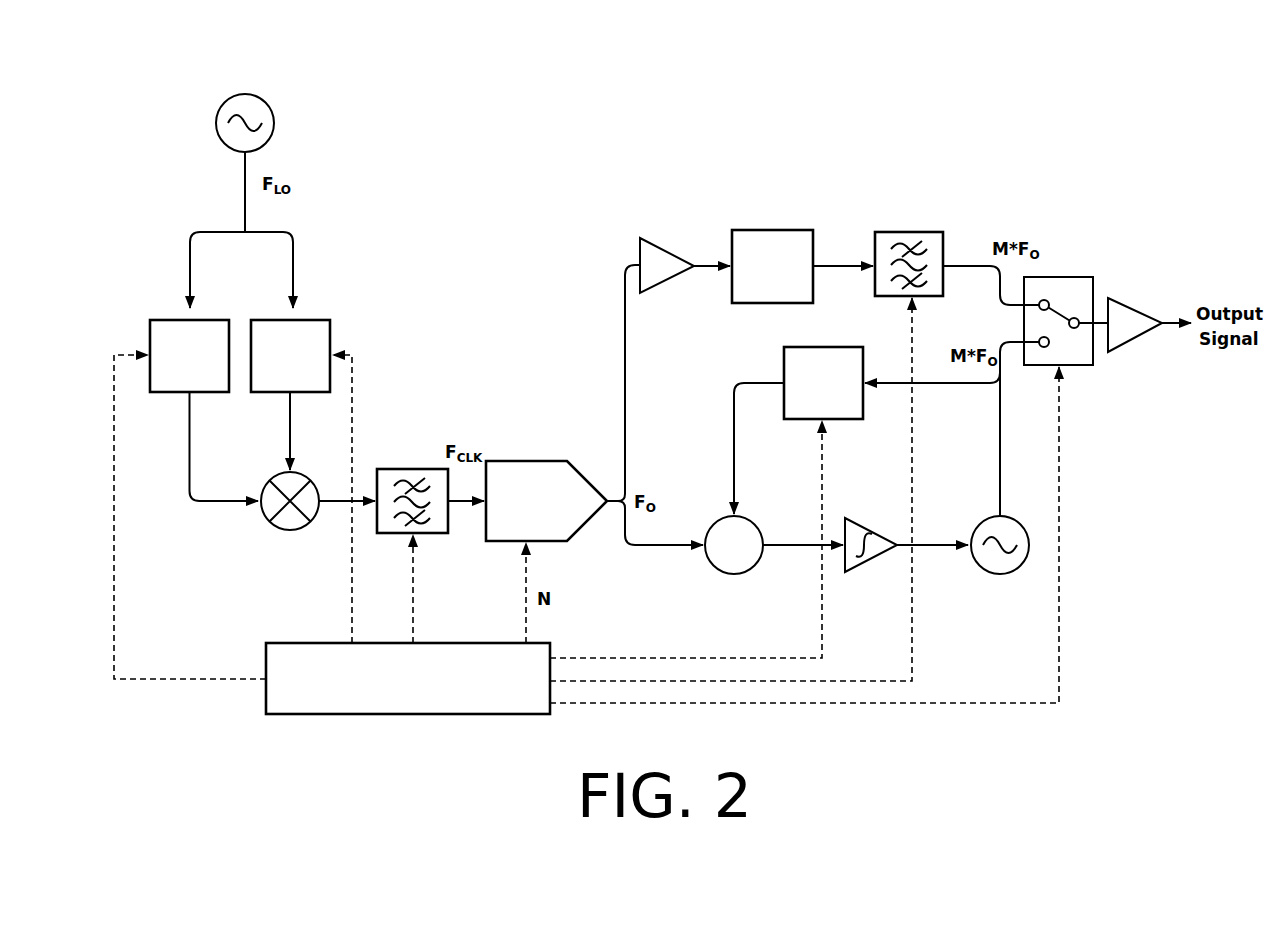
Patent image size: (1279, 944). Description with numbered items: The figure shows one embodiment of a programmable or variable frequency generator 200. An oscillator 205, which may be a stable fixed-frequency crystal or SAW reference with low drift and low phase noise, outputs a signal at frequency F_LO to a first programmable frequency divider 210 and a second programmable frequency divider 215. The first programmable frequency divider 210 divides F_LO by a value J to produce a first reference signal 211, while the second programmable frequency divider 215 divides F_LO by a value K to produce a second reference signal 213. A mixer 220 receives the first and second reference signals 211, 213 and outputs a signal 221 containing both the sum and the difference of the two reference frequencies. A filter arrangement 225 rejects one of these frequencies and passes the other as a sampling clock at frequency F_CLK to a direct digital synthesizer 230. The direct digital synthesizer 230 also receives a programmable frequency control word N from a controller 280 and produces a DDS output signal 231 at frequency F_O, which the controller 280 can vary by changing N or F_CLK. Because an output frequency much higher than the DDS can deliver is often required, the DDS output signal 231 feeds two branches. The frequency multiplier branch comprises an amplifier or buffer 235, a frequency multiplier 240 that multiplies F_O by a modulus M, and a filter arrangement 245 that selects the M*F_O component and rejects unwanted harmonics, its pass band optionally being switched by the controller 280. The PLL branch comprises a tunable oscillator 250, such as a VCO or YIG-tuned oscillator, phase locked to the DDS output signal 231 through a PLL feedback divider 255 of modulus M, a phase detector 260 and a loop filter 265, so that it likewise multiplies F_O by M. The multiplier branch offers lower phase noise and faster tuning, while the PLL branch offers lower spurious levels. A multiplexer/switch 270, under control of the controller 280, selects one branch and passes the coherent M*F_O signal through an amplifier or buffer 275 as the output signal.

The frequency generator 200 is at (1228, 62).
The oscillator 205 is at (274, 123).
The first programmable frequency divider 210 is at (150, 318).
The first reference signal 211 is at (189, 410).
The second reference signal 213 is at (290, 410).
The second programmable frequency divider 215 is at (330, 322).
The mixer 220 is at (290, 530).
The signal 221 is at (338, 500).
The filter arrangement 225 is at (400, 468).
The direct digital synthesizer 230 is at (525, 461).
The DDS output signal 231 is at (625, 292).
The amplifier or buffer 235 is at (662, 250).
The frequency multiplier 240 is at (773, 230).
The filter arrangement 245 is at (908, 232).
The tunable oscillator 250 is at (1000, 574).
The PLL feedback divider 255 is at (784, 362).
The phase detector 260 is at (734, 574).
The loop filter 265 is at (877, 558).
The multiplexer/switch 270 is at (1055, 277).
The amplifier or buffer 275 is at (1130, 303).
The controller 280 is at (266, 643).